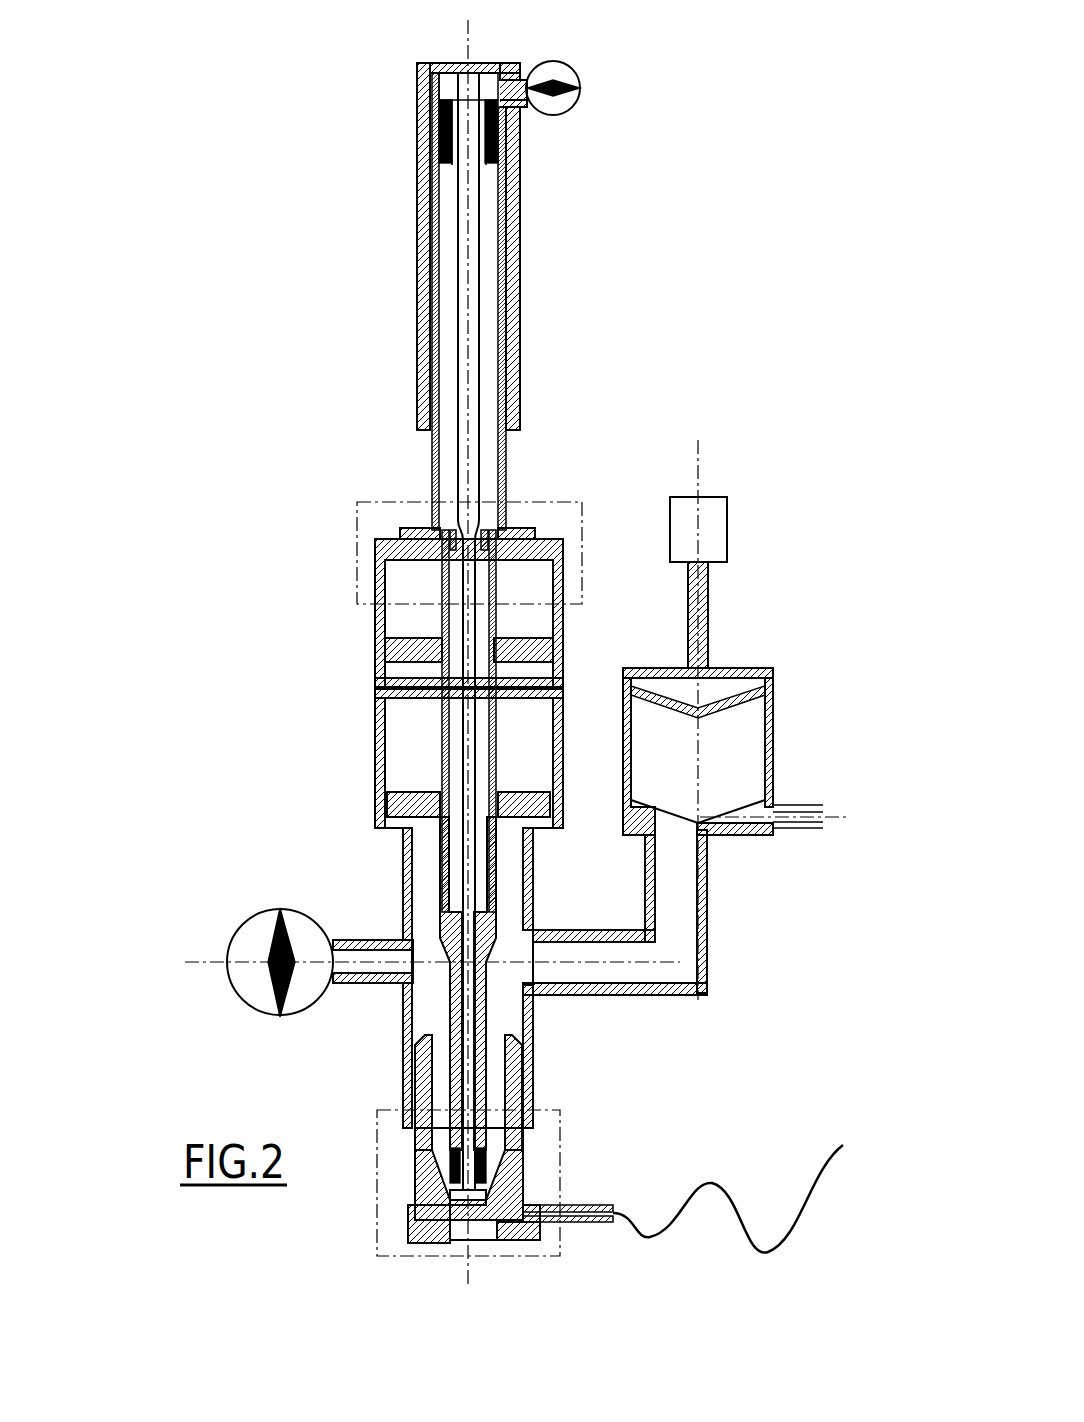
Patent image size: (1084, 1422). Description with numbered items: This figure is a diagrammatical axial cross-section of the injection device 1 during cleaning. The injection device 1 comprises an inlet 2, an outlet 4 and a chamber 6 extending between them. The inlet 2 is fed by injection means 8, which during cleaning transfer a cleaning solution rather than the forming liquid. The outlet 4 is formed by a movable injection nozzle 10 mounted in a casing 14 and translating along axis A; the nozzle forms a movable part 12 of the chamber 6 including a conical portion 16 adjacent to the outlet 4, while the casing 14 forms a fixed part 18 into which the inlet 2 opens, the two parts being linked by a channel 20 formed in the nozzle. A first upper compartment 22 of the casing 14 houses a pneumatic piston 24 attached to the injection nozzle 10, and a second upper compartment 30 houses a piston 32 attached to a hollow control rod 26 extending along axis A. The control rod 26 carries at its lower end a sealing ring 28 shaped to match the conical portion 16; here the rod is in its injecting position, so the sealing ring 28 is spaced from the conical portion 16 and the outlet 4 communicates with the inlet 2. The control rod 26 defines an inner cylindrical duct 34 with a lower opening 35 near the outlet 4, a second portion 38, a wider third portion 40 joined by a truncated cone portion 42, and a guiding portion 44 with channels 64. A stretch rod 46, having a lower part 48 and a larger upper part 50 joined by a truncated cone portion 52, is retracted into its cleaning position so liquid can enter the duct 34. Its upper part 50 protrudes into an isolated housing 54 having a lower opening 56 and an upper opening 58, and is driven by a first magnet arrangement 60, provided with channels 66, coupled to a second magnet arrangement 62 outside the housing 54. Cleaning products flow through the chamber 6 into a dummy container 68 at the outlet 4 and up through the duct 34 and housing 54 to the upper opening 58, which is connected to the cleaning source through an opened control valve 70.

The injection device 1 is at (332, 500).
The inlet 2 is at (540, 945).
The outlet 4 is at (452, 1180).
The chamber 6 is at (440, 1150).
The injection means 8 is at (730, 745).
The injection nozzle 10 is at (520, 1100).
The movable part of the chamber 12 is at (440, 1170).
The casing 14 is at (408, 995).
The conical portion 16 is at (500, 1160).
The fixed part of the chamber 18 is at (508, 1040).
The channel 20 is at (430, 1050).
The first upper compartment 22 is at (410, 745).
The piston 24 is at (420, 785).
The hollow control rod 26 is at (455, 927).
The sealing ring 28 is at (530, 1210).
The second upper compartment 30 is at (410, 600).
The piston 32 is at (400, 650).
The inner cylindrical duct 34 is at (540, 800).
The lower opening 35 is at (480, 1240).
The second portion 38 is at (500, 1060).
The third portion 40 is at (500, 540).
The truncated cone portion 42 is at (435, 880).
The guiding portion 44 is at (440, 525).
The stretch rod 46 is at (462, 582).
The lower part of the stretch rod 48 is at (480, 597).
The upper part of the stretch rod 50 is at (470, 320).
The truncated cone portion 52 is at (485, 530).
The housing 54 is at (520, 250).
The lower opening 56 is at (436, 470).
The upper opening 58 is at (520, 65).
The first magnet arrangement 60 is at (437, 120).
The second magnet arrangement 62 is at (518, 175).
The channels 64 is at (450, 535).
The channels 66 is at (513, 135).
The dummy container 68 is at (432, 1230).
The control valve 70 is at (562, 75).
The axis A is at (466, 35).